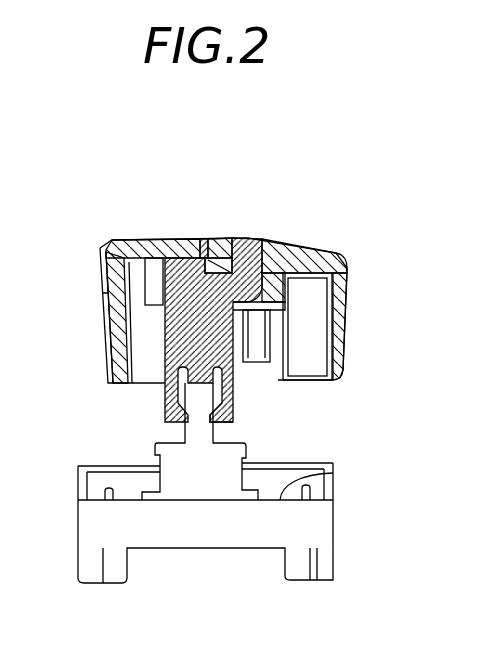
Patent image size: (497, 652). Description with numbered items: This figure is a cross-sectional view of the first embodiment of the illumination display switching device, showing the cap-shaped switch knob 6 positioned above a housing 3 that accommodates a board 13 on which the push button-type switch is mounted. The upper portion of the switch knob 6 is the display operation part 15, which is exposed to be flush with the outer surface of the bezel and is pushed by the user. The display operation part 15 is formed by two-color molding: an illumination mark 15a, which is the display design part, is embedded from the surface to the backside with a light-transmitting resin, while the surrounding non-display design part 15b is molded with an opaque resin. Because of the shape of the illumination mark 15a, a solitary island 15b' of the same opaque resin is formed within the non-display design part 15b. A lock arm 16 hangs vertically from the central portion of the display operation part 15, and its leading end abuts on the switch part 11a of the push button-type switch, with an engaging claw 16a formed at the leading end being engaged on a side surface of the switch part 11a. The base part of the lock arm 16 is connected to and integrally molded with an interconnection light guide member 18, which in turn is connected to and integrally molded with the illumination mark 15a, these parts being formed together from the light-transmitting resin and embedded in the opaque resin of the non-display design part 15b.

The housing 3 is at (335, 527).
The switch knob 6 is at (336, 254).
The switch part 11a is at (203, 397).
The board 13 is at (333, 473).
The display operation part 15 is at (280, 243).
The illumination mark 15a is at (200, 240).
The non-display design part 15b is at (129, 238).
The solitary island 15b' is at (225, 203).
The lock arm 16 is at (165, 330).
The engaging claw 16a is at (237, 413).
The interconnection light guide member 18 is at (113, 263).